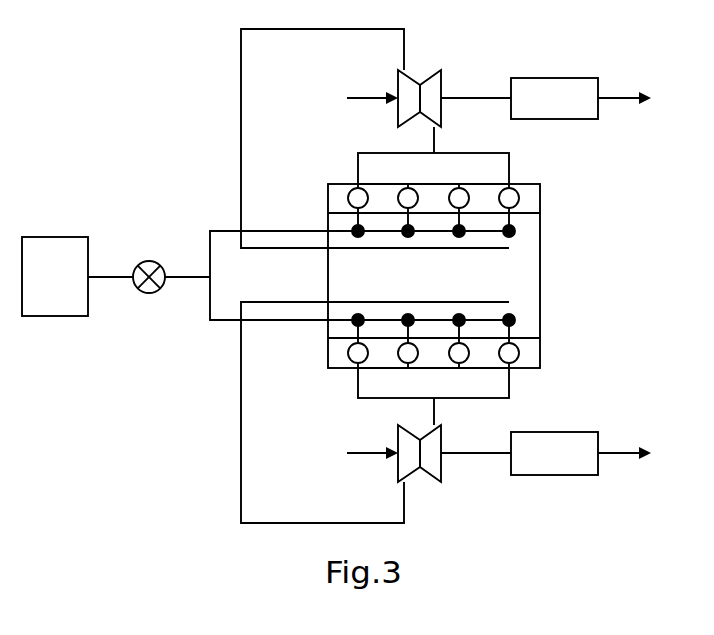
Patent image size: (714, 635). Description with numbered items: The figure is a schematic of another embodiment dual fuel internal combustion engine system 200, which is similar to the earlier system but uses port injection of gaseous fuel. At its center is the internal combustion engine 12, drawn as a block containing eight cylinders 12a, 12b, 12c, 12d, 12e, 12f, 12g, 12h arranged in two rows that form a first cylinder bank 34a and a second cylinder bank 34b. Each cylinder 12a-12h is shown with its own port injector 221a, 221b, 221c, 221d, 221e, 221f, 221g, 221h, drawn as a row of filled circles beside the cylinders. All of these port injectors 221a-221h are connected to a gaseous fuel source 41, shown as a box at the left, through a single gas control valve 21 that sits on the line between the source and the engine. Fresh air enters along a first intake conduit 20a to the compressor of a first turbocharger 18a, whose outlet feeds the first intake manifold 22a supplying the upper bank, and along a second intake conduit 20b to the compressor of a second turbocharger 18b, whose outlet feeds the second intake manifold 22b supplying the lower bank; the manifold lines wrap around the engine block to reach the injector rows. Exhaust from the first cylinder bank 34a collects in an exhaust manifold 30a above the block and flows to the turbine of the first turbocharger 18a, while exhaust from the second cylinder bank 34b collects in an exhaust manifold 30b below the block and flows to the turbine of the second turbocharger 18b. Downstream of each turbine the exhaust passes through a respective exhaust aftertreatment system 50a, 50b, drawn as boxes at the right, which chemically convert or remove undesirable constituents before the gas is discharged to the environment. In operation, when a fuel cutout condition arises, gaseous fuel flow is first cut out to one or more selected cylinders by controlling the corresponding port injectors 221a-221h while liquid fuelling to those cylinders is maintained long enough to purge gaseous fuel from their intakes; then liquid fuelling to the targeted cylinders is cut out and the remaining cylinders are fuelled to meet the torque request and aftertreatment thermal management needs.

The dual fuel internal combustion engine system 200 is at (661, 71).
The internal combustion engine 12 is at (549, 277).
The cylinder 12a is at (352, 191).
The cylinder 12b is at (402, 191).
The cylinder 12c is at (453, 191).
The cylinder 12d is at (503, 191).
The cylinder 12e is at (352, 361).
The cylinder 12f is at (402, 361).
The cylinder 12g is at (453, 361).
The cylinder 12h is at (503, 361).
The first turbocharger 18a is at (447, 58).
The second turbocharger 18b is at (449, 501).
The first intake conduit 20a is at (362, 97).
The second intake conduit 20b is at (364, 457).
The gas control valve 21 is at (151, 261).
The first intake manifold 22a is at (305, 249).
The second intake manifold 22b is at (258, 302).
The exhaust manifold 30a is at (511, 154).
The exhaust manifold 30b is at (511, 397).
The first cylinder bank 34a is at (549, 200).
The second cylinder bank 34b is at (549, 357).
The gaseous fuel source 41 is at (42, 288).
The exhaust aftertreatment system 50a is at (538, 109).
The exhaust aftertreatment system 50b is at (538, 465).
The port injector 221a is at (361, 237).
The port injector 221b is at (411, 237).
The port injector 221c is at (462, 237).
The port injector 221d is at (512, 237).
The port injector 221e is at (361, 315).
The port injector 221f is at (411, 315).
The port injector 221g is at (462, 315).
The port injector 221h is at (512, 315).